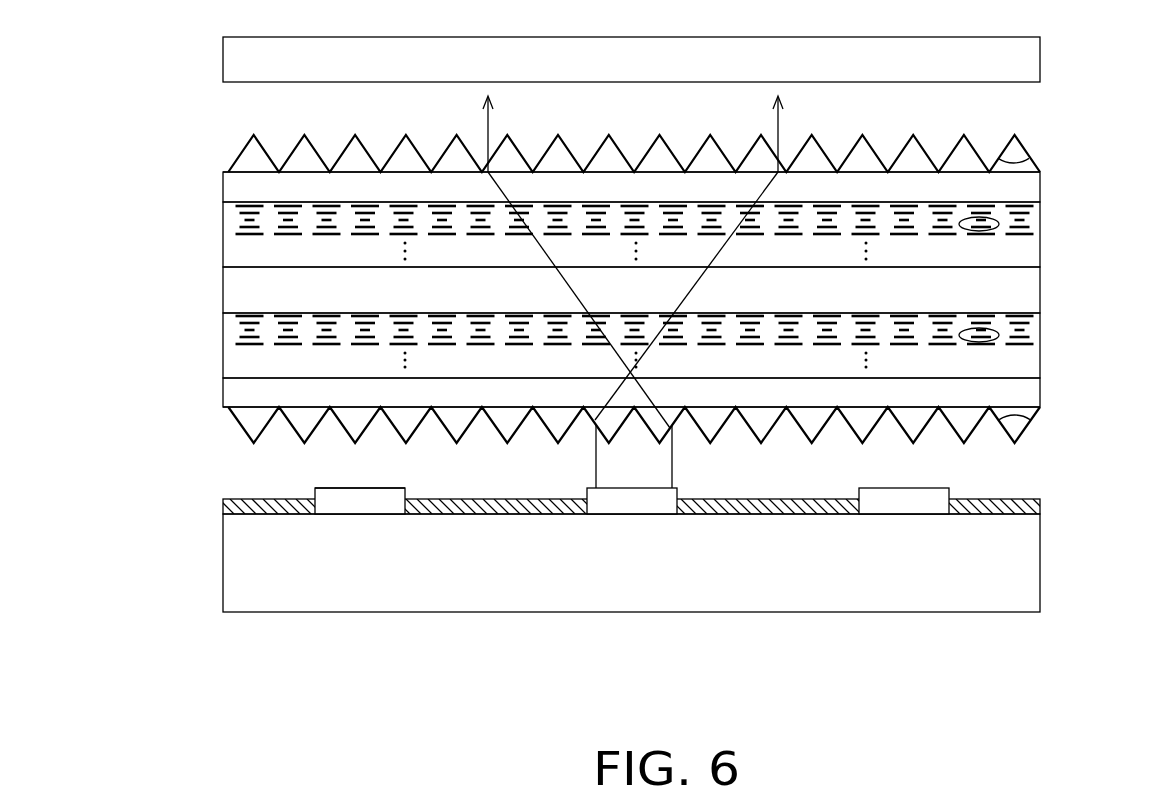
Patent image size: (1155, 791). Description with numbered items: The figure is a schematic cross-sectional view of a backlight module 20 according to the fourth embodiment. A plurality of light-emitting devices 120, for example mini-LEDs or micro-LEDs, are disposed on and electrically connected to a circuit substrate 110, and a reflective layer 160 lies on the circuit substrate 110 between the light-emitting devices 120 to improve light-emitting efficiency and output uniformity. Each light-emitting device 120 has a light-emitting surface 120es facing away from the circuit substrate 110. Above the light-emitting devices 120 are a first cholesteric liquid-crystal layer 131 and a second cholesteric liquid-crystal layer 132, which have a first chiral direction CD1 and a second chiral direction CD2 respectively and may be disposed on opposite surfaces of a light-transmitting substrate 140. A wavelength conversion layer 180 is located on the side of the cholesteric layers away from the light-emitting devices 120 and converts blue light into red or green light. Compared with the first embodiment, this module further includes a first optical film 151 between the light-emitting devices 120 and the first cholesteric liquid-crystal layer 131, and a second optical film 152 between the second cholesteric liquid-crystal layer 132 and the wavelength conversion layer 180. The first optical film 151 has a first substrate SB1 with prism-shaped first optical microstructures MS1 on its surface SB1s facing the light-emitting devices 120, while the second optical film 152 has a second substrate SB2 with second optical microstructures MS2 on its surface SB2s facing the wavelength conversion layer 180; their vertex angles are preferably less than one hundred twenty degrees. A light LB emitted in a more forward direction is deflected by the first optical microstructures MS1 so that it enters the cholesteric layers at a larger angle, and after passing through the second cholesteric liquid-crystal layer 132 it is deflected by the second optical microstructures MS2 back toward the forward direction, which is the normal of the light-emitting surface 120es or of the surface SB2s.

The backlight module 20 is at (604, 364).
The circuit substrate 110 is at (1025, 587).
The light-emitting devices 120 is at (898, 498).
The light-emitting surface 120es is at (361, 488).
The first cholesteric liquid-crystal layer 131 is at (1018, 361).
The second cholesteric liquid-crystal layer 132 is at (1025, 250).
The light-transmitting substrate 140 is at (1025, 293).
The first optical film 151 is at (550, 433).
The second optical film 152 is at (550, 154).
The reflective layer 160 is at (1040, 500).
The wavelength conversion layer 180 is at (1030, 58).
The first substrate SB1 is at (242, 388).
The second substrate SB2 is at (240, 190).
The first optical microstructures MS1 is at (240, 418).
The second optical microstructures MS2 is at (248, 162).
The surface of the first substrate SB1s is at (297, 408).
The surface of the second substrate SB2s is at (303, 171).
The first chiral direction CD1 is at (996, 332).
The second chiral direction CD2 is at (988, 217).
The light LB is at (672, 465).